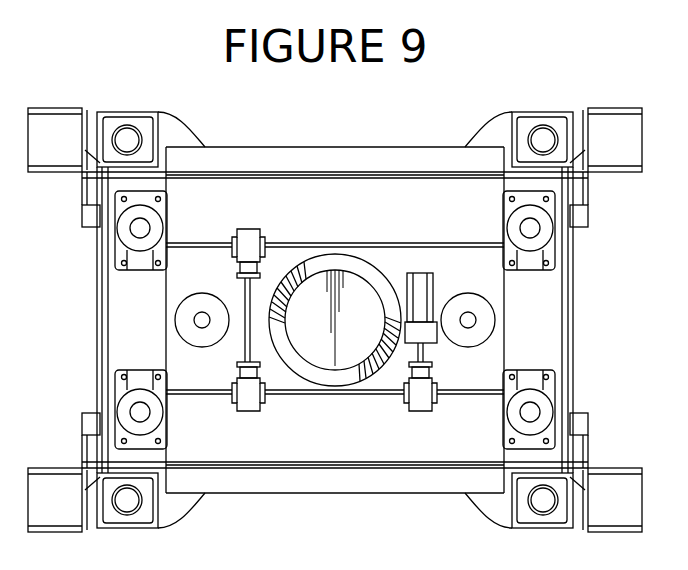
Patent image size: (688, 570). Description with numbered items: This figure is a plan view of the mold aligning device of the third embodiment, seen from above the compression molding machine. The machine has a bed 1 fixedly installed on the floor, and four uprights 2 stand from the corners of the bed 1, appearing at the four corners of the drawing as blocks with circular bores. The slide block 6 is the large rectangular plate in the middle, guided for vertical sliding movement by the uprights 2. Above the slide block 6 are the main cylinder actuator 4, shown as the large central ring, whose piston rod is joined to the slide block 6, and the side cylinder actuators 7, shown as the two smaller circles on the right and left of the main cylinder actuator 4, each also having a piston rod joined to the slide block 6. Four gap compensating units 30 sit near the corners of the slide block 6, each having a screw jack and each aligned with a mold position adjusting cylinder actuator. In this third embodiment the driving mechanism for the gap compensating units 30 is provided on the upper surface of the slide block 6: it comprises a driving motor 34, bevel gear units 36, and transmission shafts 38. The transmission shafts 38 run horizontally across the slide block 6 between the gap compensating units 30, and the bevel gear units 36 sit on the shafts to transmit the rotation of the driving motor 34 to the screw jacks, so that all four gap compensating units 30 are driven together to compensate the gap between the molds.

The bed 1 is at (571, 342).
The uprights 2 is at (132, 141).
The main cylinder actuator 4 is at (372, 261).
The slide block 6 is at (295, 440).
The side cylinder actuators 7 is at (175, 320).
The gap compensating units 30 is at (128, 226).
The driving motor 34 is at (425, 273).
The bevel gear units 36 is at (246, 241).
The transmission shafts 38 is at (190, 243).